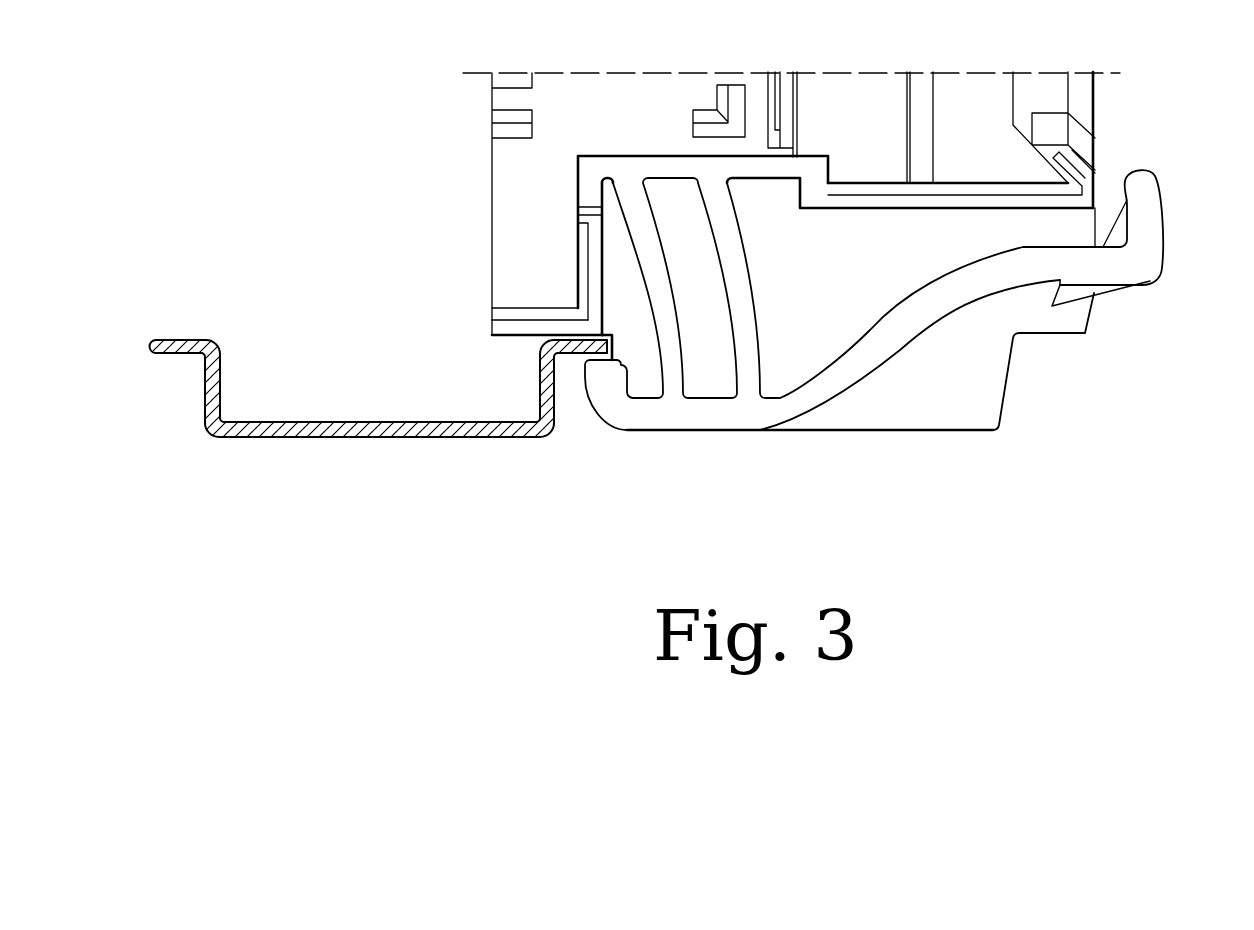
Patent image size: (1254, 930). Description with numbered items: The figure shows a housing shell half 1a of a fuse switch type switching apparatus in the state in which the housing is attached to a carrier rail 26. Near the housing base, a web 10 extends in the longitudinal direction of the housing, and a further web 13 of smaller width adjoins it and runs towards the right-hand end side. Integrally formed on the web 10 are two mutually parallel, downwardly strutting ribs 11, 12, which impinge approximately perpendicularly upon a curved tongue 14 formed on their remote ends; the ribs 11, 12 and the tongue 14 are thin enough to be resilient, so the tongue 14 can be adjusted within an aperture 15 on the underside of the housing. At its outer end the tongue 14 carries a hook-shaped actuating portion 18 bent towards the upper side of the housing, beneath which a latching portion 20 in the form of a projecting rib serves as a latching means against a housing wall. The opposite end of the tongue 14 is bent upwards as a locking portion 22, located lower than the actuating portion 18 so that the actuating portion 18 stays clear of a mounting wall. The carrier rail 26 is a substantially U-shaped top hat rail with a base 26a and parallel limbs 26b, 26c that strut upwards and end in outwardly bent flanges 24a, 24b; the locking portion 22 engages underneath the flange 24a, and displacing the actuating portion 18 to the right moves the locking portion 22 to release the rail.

The housing shell half 1a is at (1088, 93).
The web 10 is at (613, 165).
The rib 11 is at (675, 372).
The rib 12 is at (750, 368).
The further web 13 is at (850, 200).
The tongue 14 is at (843, 378).
The aperture 15 is at (973, 392).
The actuating portion 18 is at (1150, 225).
The latching portion 20 is at (1093, 289).
The locking portion 22 is at (603, 375).
The flange 24a is at (552, 355).
The flange 24b is at (188, 338).
The carrier rail 26 is at (370, 409).
The base 26a is at (415, 428).
The limb 26b is at (210, 392).
The limb 26c is at (560, 387).